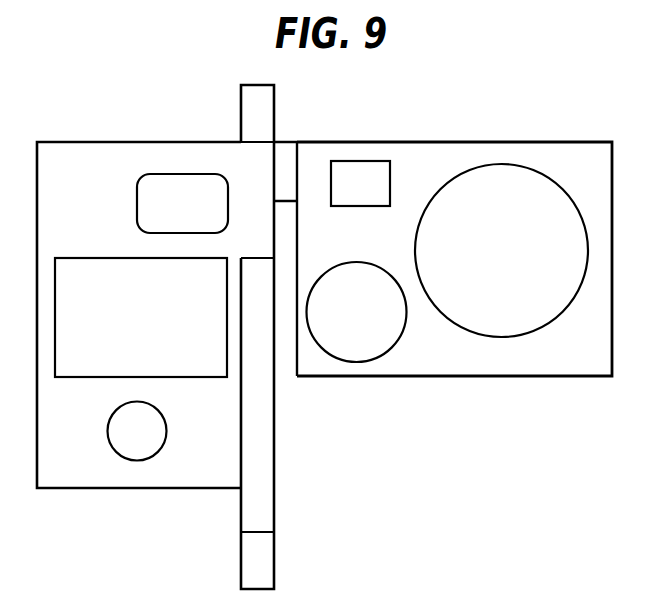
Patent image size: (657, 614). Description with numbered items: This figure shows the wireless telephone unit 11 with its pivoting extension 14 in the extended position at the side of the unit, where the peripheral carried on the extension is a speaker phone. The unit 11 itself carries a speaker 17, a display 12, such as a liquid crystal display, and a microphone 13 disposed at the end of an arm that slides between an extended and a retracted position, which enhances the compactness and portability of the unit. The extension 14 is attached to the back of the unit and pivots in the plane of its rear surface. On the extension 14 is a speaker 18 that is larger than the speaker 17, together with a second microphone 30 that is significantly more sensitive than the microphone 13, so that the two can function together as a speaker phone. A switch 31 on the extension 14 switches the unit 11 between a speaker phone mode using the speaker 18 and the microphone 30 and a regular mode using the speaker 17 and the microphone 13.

The wireless telephone unit 11 is at (79, 177).
The display 12 is at (126, 330).
The microphone 13 is at (262, 567).
The extension 14 is at (588, 177).
The speaker 17 is at (166, 217).
The speaker 18 is at (486, 264).
The second microphone 30 is at (340, 327).
The switch 31 is at (344, 198).